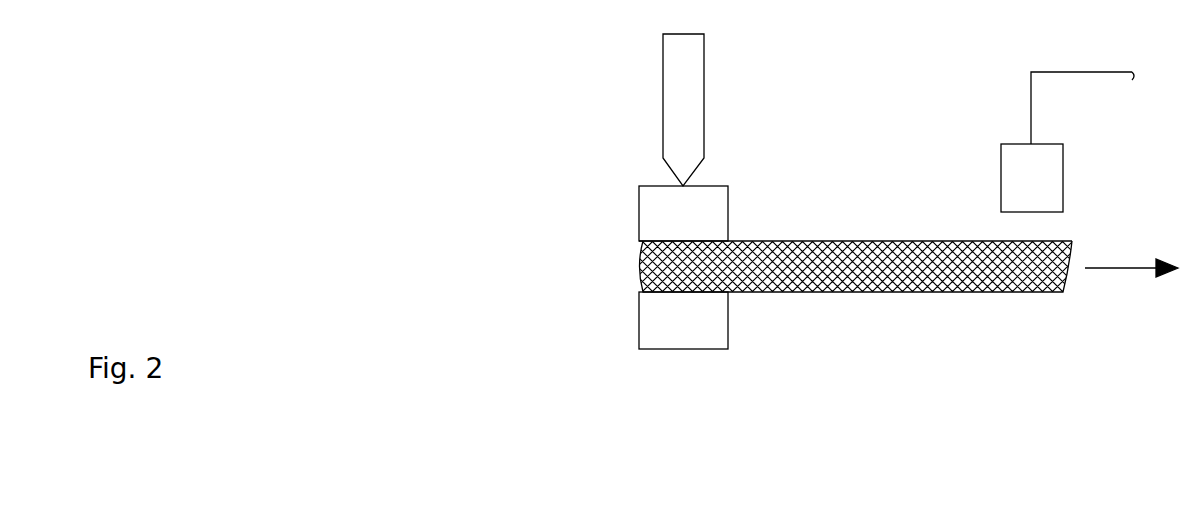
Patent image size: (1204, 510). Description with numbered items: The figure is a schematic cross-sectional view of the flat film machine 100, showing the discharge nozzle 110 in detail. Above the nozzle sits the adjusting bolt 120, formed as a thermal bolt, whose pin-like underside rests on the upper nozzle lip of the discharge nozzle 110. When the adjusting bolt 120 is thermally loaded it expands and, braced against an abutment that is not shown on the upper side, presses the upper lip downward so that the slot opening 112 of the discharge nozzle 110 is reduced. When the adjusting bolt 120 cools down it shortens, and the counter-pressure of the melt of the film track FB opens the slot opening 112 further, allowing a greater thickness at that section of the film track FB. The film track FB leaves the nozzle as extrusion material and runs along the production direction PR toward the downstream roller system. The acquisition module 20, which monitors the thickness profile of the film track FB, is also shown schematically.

The flat film machine 100 is at (406, 209).
The adjusting bolt 120 is at (675, 100).
The discharge nozzle 110 is at (720, 315).
The slot opening 112 is at (748, 234).
The film track FB is at (982, 292).
The production direction PR is at (1131, 259).
The acquisition module 20 is at (1052, 180).